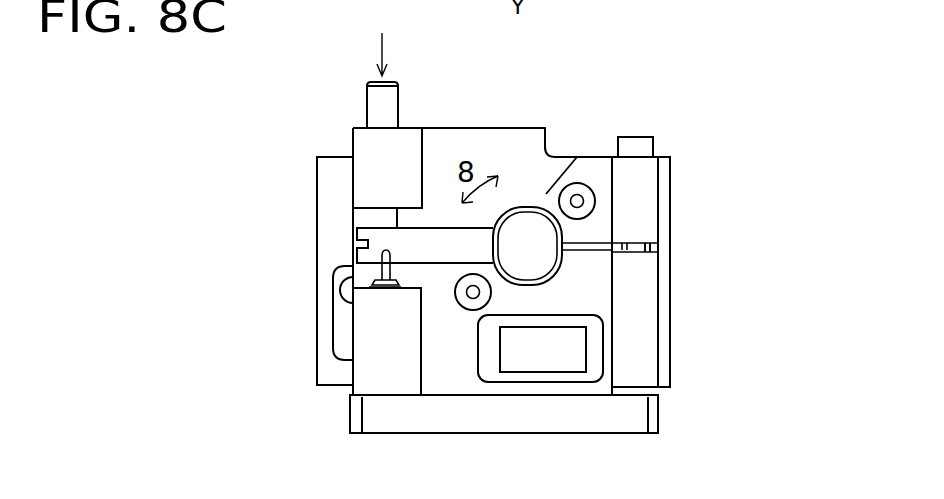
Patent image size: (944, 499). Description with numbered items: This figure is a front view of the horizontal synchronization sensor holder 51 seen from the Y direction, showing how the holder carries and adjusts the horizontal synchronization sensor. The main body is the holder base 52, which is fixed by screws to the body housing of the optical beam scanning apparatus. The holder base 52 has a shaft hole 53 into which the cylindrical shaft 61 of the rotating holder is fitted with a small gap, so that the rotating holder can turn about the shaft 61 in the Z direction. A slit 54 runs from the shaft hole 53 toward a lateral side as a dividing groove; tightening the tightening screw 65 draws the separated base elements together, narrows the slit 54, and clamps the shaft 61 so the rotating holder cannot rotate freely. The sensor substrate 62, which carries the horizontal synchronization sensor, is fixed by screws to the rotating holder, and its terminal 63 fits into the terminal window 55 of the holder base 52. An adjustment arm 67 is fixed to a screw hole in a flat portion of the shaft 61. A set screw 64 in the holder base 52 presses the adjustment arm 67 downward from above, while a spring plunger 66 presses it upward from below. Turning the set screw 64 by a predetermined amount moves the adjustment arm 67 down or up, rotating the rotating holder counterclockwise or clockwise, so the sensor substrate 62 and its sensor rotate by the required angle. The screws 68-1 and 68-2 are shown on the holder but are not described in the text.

The horizontal synchronization sensor holder 51 is at (760, 346).
The holder base 52 is at (630, 285).
The shaft hole 53 is at (518, 287).
The slit 54 is at (652, 247).
The terminal window 55 is at (603, 375).
The shaft 61 is at (535, 253).
The sensor substrate 62 is at (338, 207).
The terminal 63 is at (565, 343).
The set screw 64 is at (378, 105).
The tightening screw 65 is at (635, 147).
The spring plunger 66 is at (353, 270).
The adjustment arm 67 is at (375, 233).
The screw 68-1 is at (583, 201).
The screw 68-2 is at (455, 298).